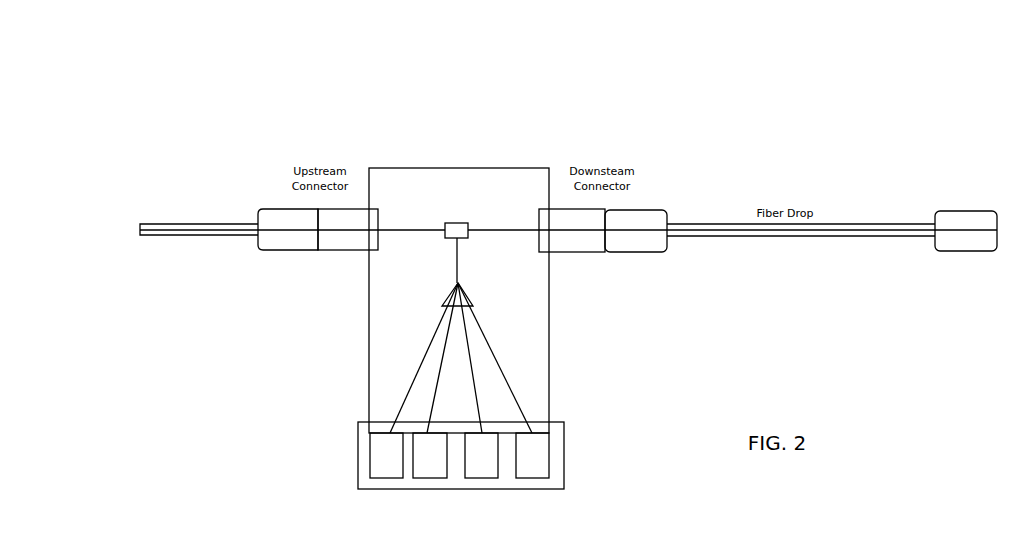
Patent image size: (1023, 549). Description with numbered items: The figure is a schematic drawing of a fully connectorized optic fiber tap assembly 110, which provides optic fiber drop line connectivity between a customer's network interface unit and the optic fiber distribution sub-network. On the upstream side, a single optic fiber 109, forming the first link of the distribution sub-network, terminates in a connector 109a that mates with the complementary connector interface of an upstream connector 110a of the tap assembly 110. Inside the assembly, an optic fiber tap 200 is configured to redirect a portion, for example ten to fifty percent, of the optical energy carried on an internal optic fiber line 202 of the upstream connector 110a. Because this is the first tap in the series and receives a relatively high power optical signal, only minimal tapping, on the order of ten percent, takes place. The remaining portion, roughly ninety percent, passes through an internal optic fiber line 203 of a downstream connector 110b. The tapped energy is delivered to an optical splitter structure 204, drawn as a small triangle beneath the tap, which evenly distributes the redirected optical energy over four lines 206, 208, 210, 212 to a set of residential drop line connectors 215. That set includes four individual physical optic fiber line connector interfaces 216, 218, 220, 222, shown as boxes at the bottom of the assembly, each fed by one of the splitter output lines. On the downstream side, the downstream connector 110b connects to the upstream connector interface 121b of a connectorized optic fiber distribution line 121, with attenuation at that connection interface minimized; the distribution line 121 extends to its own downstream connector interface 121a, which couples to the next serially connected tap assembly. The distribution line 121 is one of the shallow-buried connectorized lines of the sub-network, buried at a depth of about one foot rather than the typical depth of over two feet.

The fully connectorized optic fiber tap assembly 110 is at (368, 133).
The single optic fiber 109 is at (153, 224).
The connector 109a is at (289, 250).
The upstream connector 110a is at (347, 250).
The internal optic fiber line 202 is at (392, 230).
The optic fiber tap 200 is at (457, 223).
The internal optic fiber line 203 is at (512, 230).
The downstream connector 110b is at (575, 252).
The upstream connector interface 121b is at (642, 252).
The connectorized optic fiber distribution line 121 is at (803, 237).
The downstream connector interface 121a is at (965, 251).
The optical splitter structure 204 is at (466, 297).
The line 206 is at (427, 353).
The line 208 is at (440, 374).
The line 210 is at (470, 356).
The line 212 is at (517, 402).
The set of residential drop line connectors 215 is at (358, 455).
The optic fiber line connector interface 216 is at (386, 455).
The optic fiber line connector interface 218 is at (430, 455).
The optic fiber line connector interface 220 is at (481, 455).
The optic fiber line connector interface 222 is at (532, 455).